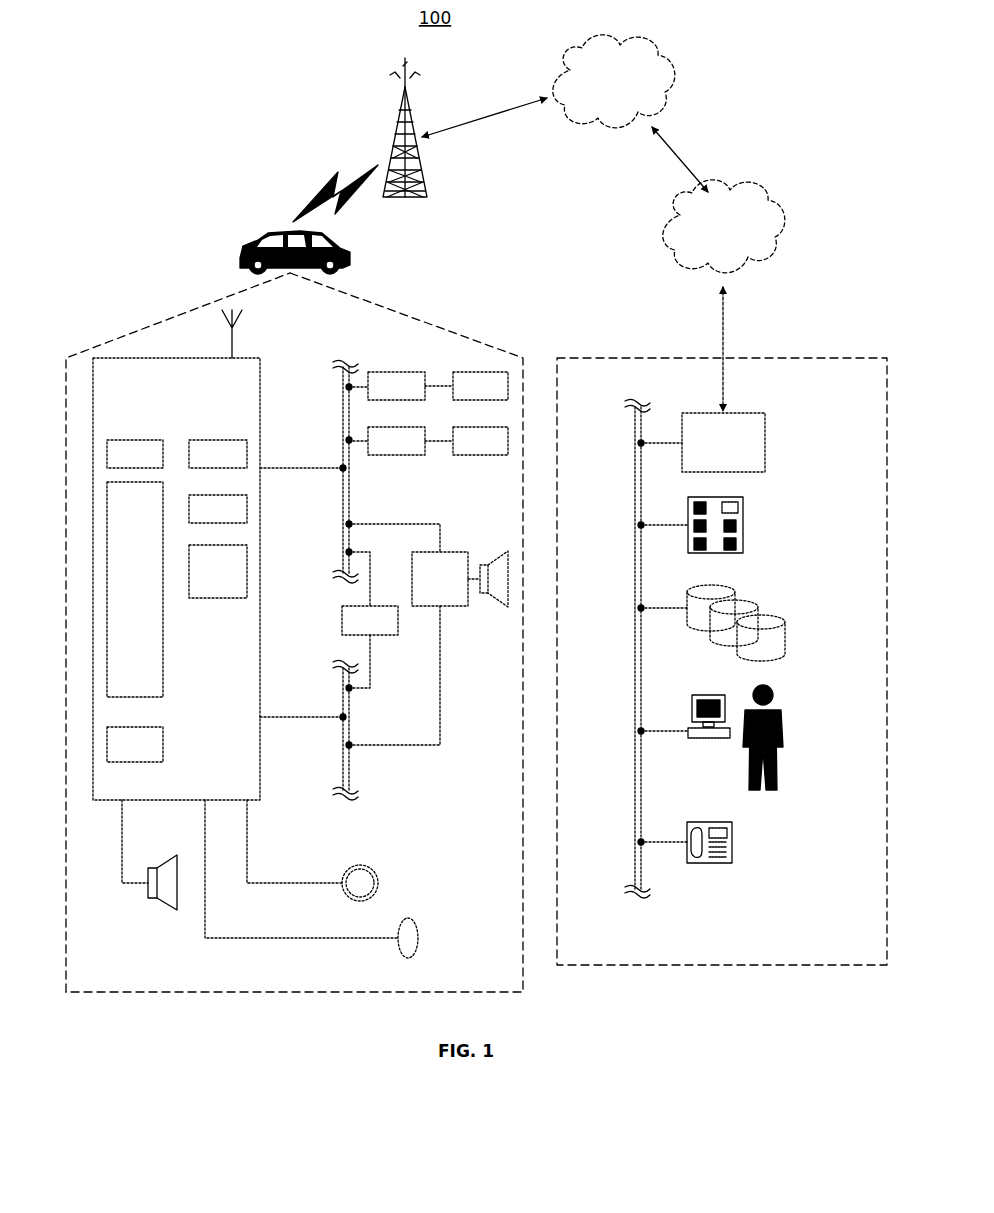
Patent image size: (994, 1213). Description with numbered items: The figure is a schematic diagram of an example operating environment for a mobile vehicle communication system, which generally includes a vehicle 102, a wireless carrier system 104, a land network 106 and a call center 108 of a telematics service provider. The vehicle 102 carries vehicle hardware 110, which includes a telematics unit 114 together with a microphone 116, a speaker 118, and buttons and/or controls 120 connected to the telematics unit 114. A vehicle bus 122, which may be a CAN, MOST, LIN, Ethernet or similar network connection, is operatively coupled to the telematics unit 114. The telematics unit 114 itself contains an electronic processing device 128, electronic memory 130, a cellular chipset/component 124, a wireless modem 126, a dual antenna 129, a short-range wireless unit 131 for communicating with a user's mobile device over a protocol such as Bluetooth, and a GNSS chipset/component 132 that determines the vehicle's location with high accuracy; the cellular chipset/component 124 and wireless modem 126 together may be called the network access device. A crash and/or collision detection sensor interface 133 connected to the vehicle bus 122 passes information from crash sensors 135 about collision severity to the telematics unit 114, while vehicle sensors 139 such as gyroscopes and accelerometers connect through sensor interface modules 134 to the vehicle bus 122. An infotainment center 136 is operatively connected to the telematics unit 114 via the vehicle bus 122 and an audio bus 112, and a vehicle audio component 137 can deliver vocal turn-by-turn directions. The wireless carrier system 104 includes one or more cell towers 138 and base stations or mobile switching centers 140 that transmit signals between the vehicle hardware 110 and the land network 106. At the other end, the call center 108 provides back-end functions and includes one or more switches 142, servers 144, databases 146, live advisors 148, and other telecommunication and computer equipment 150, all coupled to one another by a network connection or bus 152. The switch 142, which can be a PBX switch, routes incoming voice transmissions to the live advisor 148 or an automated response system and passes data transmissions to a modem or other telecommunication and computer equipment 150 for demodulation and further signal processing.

The vehicle 102 is at (240, 247).
The wireless carrier system 104 is at (526, 192).
The land network 106 is at (724, 226).
The call center 108 is at (723, 968).
The vehicle hardware 110 is at (260, 995).
The audio bus 112 is at (343, 763).
The telematics unit 114 is at (260, 655).
The microphone 116 is at (412, 918).
The speaker 118 is at (160, 903).
The buttons and/or controls 120 is at (358, 868).
The vehicle bus 122 is at (349, 511).
The cellular chipset/component 124 is at (135, 454).
The wireless modem 126 is at (218, 454).
The electronic processing device 128 is at (135, 589).
The dual antenna 129 is at (232, 352).
The electronic memory 130 is at (135, 744).
The short-range wireless unit 131 is at (218, 571).
The GNSS chipset/component 132 is at (218, 509).
The crash and/or collision detection sensor interface module 133 is at (396, 386).
The sensor interface modules 134 is at (396, 441).
The crash sensors 135 is at (466, 386).
The infotainment center 136 is at (370, 647).
The vehicle audio component 137 is at (460, 579).
The cell tower 138 is at (412, 101).
The vehicle sensors 139 is at (466, 441).
The mobile switching center 140 is at (614, 81).
The switch 142 is at (723, 442).
The servers 144 is at (743, 501).
The databases 146 is at (757, 617).
The live advisor 148 is at (780, 705).
The telecommunication and computer equipment 150 is at (732, 831).
The network connection or bus 152 is at (633, 660).